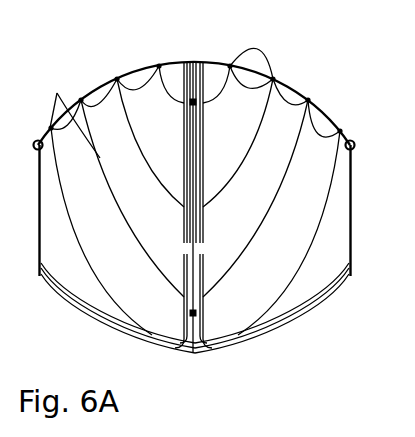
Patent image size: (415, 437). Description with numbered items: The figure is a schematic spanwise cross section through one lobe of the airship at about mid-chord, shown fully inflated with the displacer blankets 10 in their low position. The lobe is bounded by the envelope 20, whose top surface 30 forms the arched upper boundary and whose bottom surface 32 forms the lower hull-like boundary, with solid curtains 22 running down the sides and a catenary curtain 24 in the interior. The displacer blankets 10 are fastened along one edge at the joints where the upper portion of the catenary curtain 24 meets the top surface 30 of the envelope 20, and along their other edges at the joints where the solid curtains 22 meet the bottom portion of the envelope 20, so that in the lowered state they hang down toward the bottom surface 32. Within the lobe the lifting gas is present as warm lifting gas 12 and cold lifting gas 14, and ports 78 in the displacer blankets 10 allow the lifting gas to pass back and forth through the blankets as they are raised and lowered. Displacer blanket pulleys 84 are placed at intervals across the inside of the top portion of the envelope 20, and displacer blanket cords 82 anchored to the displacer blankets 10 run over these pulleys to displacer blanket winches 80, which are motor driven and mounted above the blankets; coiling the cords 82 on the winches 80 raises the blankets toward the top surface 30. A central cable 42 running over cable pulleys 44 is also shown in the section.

The displacer blanket 10 is at (74, 301).
The warm lifting gas 12 is at (192, 352).
The cold lifting gas 14 is at (316, 130).
The envelope 20 is at (307, 99).
The solid curtain 22 is at (38, 207).
The catenary curtain 24 is at (197, 88).
The top surface 30 is at (147, 63).
The bottom surface 32 is at (228, 350).
The cable 42 is at (197, 229).
The cable pulley 44 is at (189, 104).
The port 78 is at (184, 244).
The displacer blanket winch 80 is at (356, 145).
The displacer blanket cord 82 is at (112, 98).
The displacer blanket pulley 84 is at (259, 48).